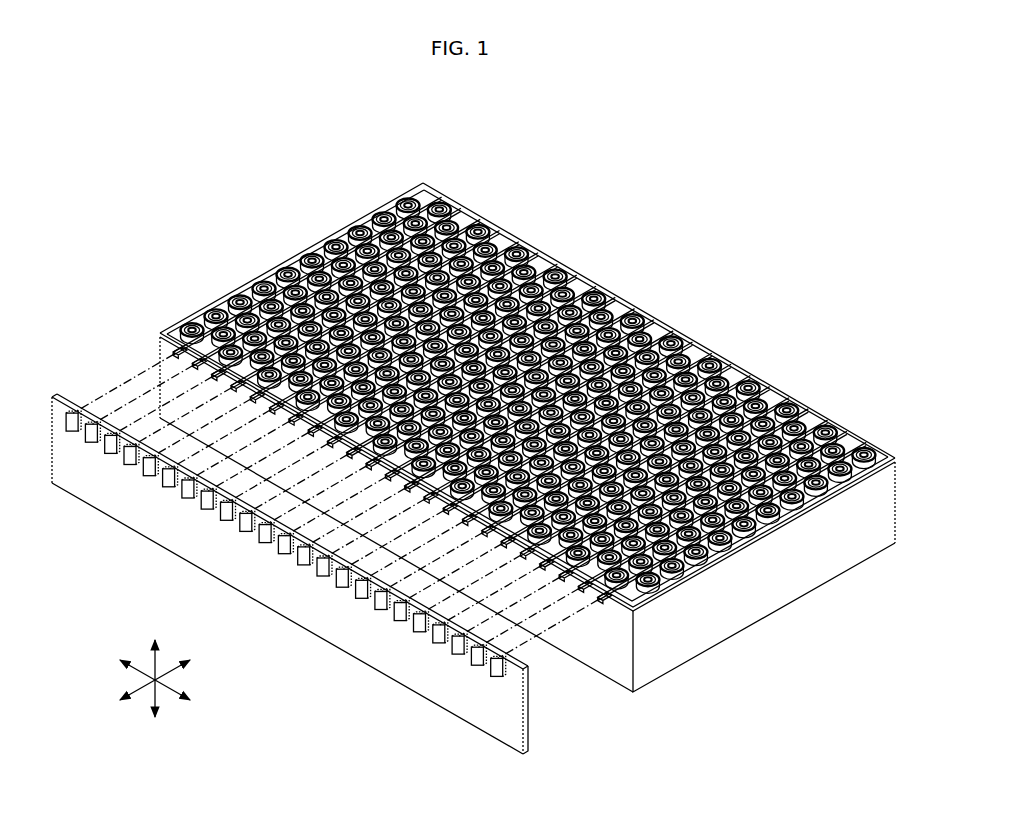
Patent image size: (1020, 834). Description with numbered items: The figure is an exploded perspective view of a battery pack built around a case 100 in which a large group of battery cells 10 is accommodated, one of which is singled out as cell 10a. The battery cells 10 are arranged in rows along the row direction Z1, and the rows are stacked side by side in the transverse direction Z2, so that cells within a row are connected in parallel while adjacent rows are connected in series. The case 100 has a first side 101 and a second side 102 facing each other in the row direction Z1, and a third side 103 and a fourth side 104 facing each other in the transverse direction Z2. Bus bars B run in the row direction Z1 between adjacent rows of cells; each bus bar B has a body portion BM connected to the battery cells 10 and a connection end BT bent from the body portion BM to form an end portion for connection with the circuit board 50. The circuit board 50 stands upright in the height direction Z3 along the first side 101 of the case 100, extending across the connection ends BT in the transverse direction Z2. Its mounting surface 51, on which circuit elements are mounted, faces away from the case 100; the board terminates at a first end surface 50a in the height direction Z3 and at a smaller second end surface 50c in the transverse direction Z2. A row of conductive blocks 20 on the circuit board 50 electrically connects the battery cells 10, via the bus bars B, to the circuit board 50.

The case 100 is at (512, 444).
The first side 101 is at (608, 653).
The second side 102 is at (622, 298).
The third side 103 is at (806, 576).
The fourth side 104 is at (268, 271).
The battery cell 10 is at (275, 271).
The first battery cell 10a is at (190, 324).
The conductive block 20 is at (78, 411).
The circuit board 50 is at (328, 600).
The first end surface 50a is at (523, 657).
The second end surface 50c is at (531, 744).
The mounting surface 51 is at (470, 711).
The bus bar B is at (524, 462).
The body portion BM is at (720, 546).
The connection end BT is at (602, 606).
The row direction Z1 is at (170, 668).
The transverse direction Z2 is at (171, 692).
The height direction Z3 is at (149, 664).